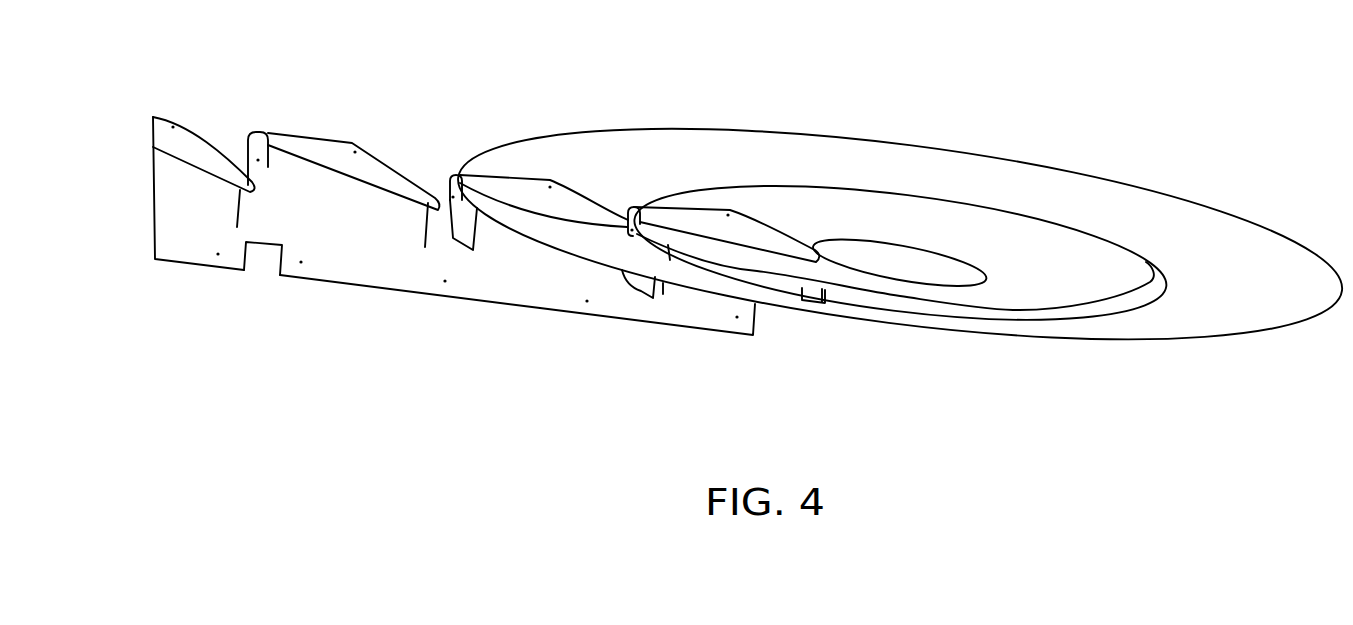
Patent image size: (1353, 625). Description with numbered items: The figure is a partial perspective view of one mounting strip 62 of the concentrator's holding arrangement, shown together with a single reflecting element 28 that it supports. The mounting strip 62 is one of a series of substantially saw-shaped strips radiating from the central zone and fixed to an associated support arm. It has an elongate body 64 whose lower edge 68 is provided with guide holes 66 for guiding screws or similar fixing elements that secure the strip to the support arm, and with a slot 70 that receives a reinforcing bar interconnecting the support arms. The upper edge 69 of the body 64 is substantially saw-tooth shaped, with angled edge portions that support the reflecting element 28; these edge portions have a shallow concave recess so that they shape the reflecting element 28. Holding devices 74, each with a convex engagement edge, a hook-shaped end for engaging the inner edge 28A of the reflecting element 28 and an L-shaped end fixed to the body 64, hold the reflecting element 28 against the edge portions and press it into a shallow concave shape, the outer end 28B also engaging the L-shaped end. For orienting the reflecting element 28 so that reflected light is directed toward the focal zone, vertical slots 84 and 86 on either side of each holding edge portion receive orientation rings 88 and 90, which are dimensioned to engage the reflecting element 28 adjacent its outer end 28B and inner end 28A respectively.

The reflecting element 28 is at (748, 128).
The inner edge of reflecting element 28A is at (925, 250).
The outer end of reflecting element 28B is at (879, 182).
The mounting strip 62 is at (410, 362).
The elongate body 64 is at (190, 253).
The guide hole 66 is at (300, 263).
The lower edge 68 is at (538, 312).
The upper edge 69 is at (437, 155).
The slot 70 is at (252, 279).
The holding device 74 is at (530, 185).
The vertical slot 84 is at (275, 137).
The vertical slot 86 is at (420, 227).
The orientation ring 88 is at (468, 228).
The orientation ring 90 is at (640, 290).